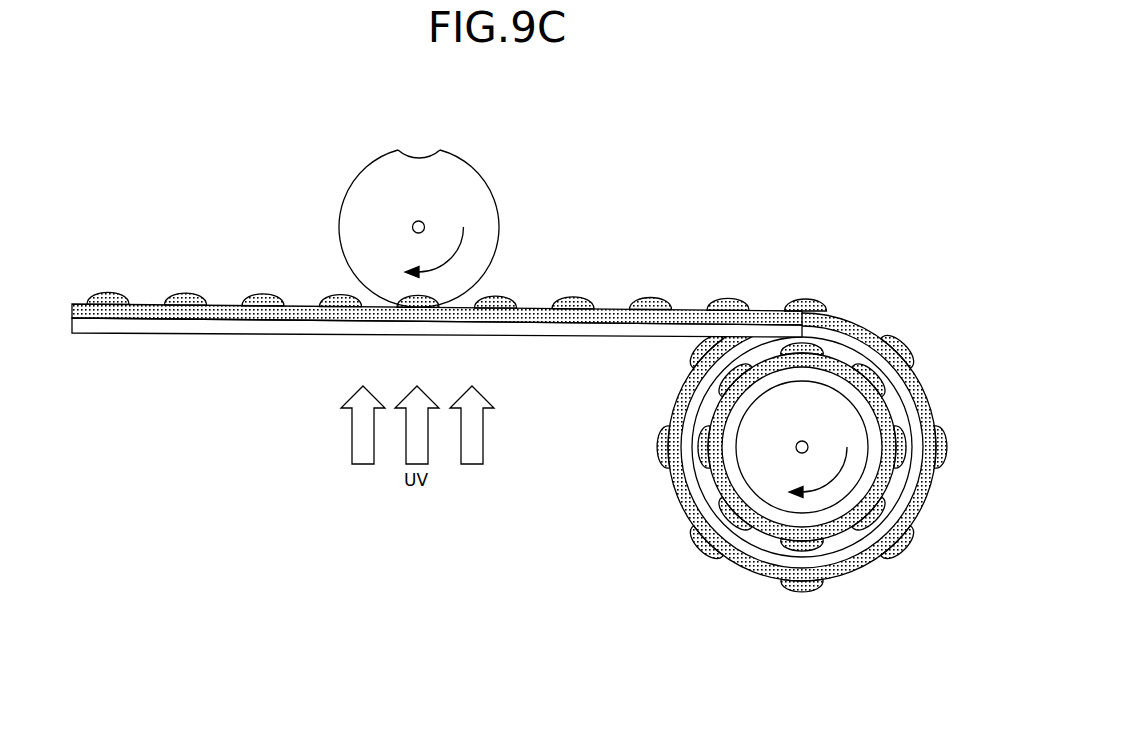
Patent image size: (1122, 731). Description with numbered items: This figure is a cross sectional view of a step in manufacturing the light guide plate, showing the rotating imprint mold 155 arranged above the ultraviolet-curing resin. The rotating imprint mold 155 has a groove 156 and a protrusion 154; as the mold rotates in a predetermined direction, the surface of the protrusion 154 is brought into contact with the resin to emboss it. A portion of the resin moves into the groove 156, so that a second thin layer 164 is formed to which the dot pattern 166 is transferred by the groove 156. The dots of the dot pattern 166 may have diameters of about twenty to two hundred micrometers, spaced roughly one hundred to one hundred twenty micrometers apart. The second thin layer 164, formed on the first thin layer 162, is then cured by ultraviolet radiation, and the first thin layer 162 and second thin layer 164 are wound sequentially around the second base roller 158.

The protrusion 154 is at (498, 228).
The rotating imprint mold 155 is at (523, 135).
The groove 156 is at (420, 157).
The second base roller 158 is at (738, 436).
The first thin layer 162 is at (255, 334).
The second thin layer 164 is at (224, 304).
The dot pattern 166 is at (651, 298).